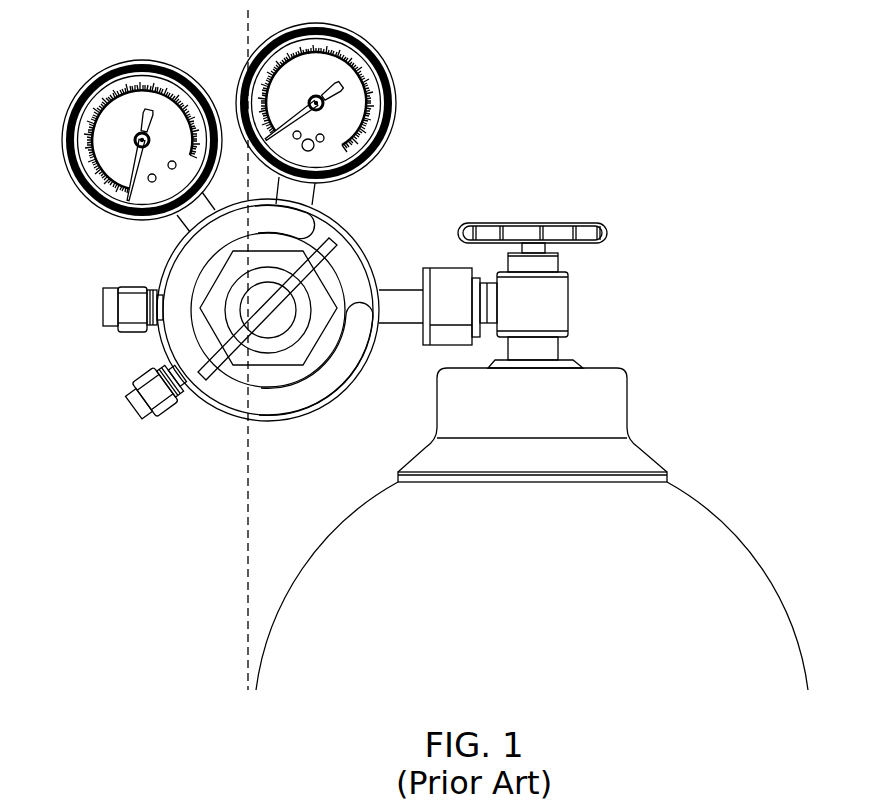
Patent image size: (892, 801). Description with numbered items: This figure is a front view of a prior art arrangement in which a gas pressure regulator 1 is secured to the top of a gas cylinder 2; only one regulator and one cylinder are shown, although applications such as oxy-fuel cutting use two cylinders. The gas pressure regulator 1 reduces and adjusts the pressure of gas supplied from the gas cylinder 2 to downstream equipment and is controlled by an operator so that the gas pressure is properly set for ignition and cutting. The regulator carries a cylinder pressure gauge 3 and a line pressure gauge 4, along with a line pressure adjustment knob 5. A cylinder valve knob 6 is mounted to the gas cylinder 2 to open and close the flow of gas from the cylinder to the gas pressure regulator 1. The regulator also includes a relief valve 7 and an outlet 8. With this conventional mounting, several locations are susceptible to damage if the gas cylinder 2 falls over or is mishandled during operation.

The gas pressure regulator 1 is at (360, 238).
The gas cylinder 2 is at (764, 536).
The cylinder pressure gauge 3 is at (93, 81).
The line pressure gauge 4 is at (373, 52).
The line pressure adjustment knob 5 is at (212, 372).
The cylinder valve knob 6 is at (558, 223).
The relief valve 7 is at (132, 286).
The outlet 8 is at (150, 378).